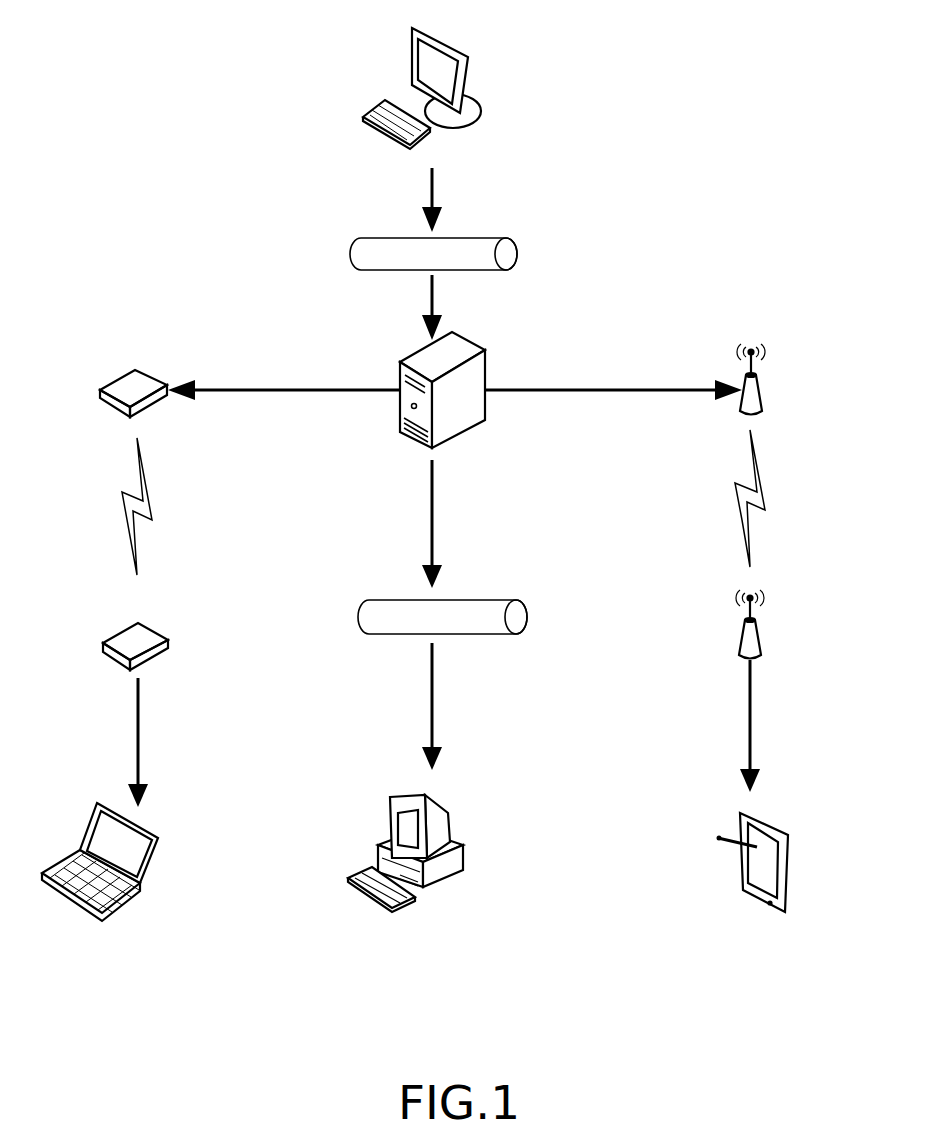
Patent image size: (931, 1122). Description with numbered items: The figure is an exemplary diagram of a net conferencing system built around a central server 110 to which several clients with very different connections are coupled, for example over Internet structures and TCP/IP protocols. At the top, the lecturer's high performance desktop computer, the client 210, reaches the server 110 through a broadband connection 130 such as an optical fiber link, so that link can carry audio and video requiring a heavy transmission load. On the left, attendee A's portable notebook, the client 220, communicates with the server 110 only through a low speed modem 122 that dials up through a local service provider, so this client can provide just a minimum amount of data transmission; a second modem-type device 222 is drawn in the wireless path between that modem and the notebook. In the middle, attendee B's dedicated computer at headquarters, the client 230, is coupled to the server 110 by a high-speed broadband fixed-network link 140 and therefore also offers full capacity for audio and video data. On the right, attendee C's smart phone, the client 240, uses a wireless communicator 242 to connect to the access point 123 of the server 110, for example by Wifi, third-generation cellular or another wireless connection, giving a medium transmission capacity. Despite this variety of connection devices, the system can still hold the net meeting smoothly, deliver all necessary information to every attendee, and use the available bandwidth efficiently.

The server 110 is at (485, 367).
The low speed modem 122 is at (135, 370).
The access point 123 is at (760, 382).
The broadband connection 130 is at (503, 240).
The network 140 is at (510, 602).
The client 210 is at (460, 47).
The client 220 is at (158, 857).
The wireless access point 222 is at (138, 623).
The client 230 is at (452, 833).
The client 240 is at (760, 815).
The wireless communicator 242 is at (758, 628).